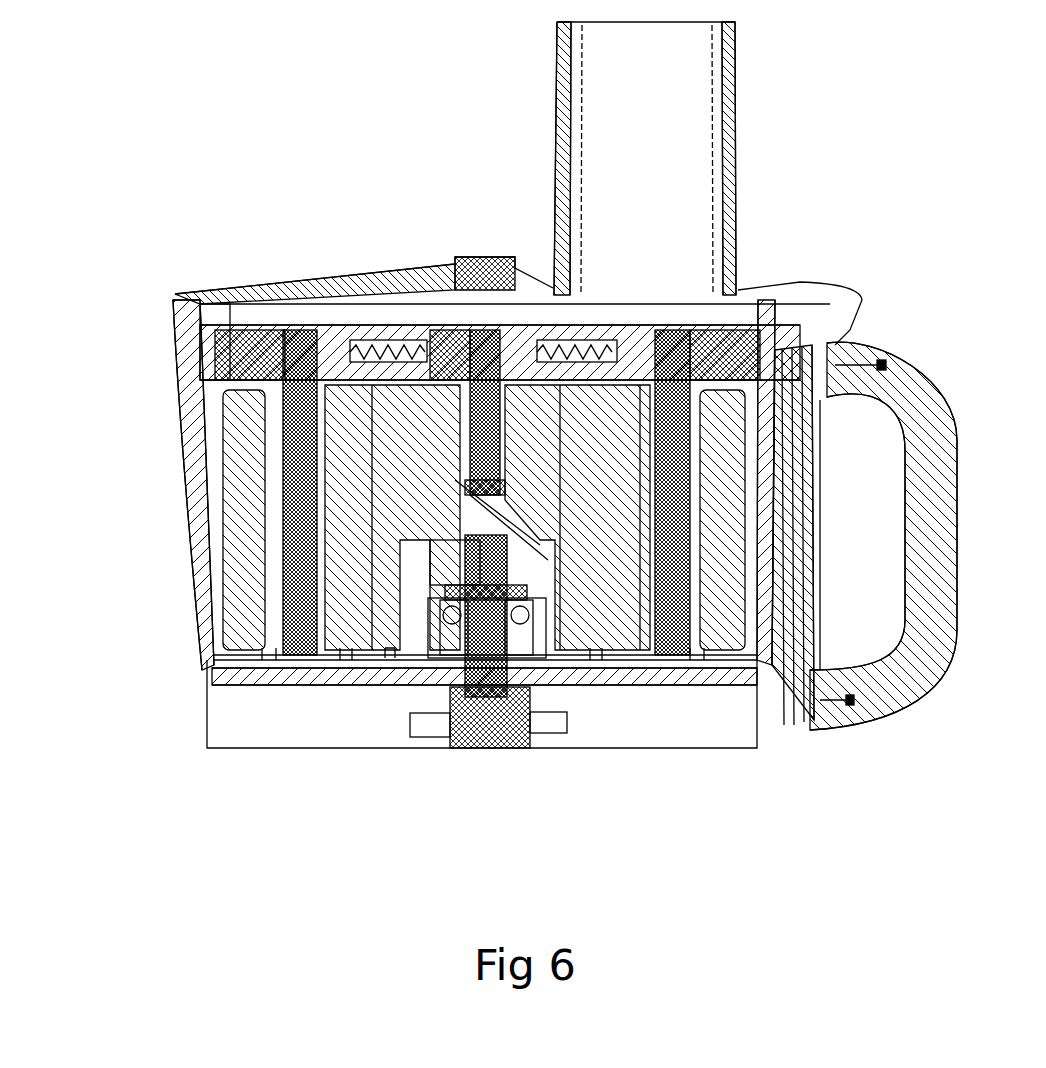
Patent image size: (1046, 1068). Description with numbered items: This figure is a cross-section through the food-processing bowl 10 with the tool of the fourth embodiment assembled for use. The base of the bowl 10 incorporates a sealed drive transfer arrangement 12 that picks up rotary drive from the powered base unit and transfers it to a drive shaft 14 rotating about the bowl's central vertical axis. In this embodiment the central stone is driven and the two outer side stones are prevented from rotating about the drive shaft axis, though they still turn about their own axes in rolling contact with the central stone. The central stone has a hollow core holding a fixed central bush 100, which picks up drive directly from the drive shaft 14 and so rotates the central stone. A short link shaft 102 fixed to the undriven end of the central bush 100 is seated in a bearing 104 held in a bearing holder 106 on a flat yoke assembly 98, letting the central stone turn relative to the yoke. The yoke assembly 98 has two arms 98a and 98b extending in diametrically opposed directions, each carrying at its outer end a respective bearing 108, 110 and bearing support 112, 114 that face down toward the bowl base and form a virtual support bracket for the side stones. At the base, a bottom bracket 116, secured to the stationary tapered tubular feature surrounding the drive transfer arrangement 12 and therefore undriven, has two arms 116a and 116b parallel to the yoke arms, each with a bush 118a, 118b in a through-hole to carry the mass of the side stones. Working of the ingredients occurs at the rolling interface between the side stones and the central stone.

The food-processing bowl 10 is at (197, 536).
The sealed drive transfer arrangement 12 is at (476, 722).
The drive shaft 14 is at (483, 660).
The yoke assembly 98 is at (365, 318).
The arm of yoke assembly 98a is at (637, 325).
The arm of yoke assembly 98b is at (325, 330).
The central bush 100 is at (508, 513).
The short link shaft 102 is at (480, 430).
The bearing 104 is at (508, 340).
The bearing holder 106 is at (447, 347).
The bearing 108 is at (697, 360).
The bearing 110 is at (275, 345).
The bearing support 112 is at (707, 335).
The bearing support 114 is at (245, 355).
The bottom bracket 116 is at (403, 670).
The arm of bottom bracket 116a is at (596, 660).
The arm of bottom bracket 116b is at (347, 660).
The bush 118a is at (697, 665).
The bush 118b is at (270, 668).